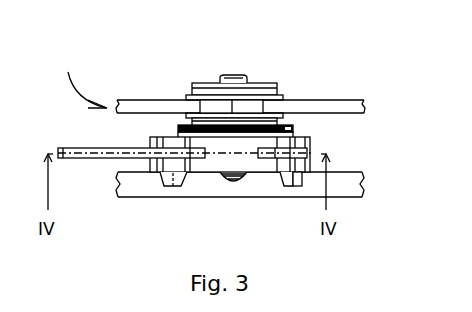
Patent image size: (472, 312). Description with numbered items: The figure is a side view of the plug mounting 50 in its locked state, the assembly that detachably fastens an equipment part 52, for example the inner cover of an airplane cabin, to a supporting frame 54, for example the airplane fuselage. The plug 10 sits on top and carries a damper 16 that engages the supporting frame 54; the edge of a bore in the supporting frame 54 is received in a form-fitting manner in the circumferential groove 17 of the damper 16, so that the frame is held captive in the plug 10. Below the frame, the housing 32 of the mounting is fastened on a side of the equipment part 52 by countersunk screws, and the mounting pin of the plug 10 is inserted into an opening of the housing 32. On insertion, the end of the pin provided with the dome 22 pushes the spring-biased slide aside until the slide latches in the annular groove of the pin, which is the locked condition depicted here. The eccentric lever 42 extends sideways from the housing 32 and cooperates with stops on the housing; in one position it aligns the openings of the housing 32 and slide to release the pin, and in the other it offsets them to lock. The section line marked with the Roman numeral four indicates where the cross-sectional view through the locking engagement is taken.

The plug 10 is at (204, 75).
The knurled ring 16 is at (256, 85).
The circumferential groove 17 is at (253, 105).
The dome 22 is at (233, 178).
The housing 32 is at (318, 137).
The eccentric lever 42 is at (90, 160).
The plug mounting 50 is at (80, 80).
The equipment part 52 is at (207, 188).
The supporting frame 54 is at (308, 106).